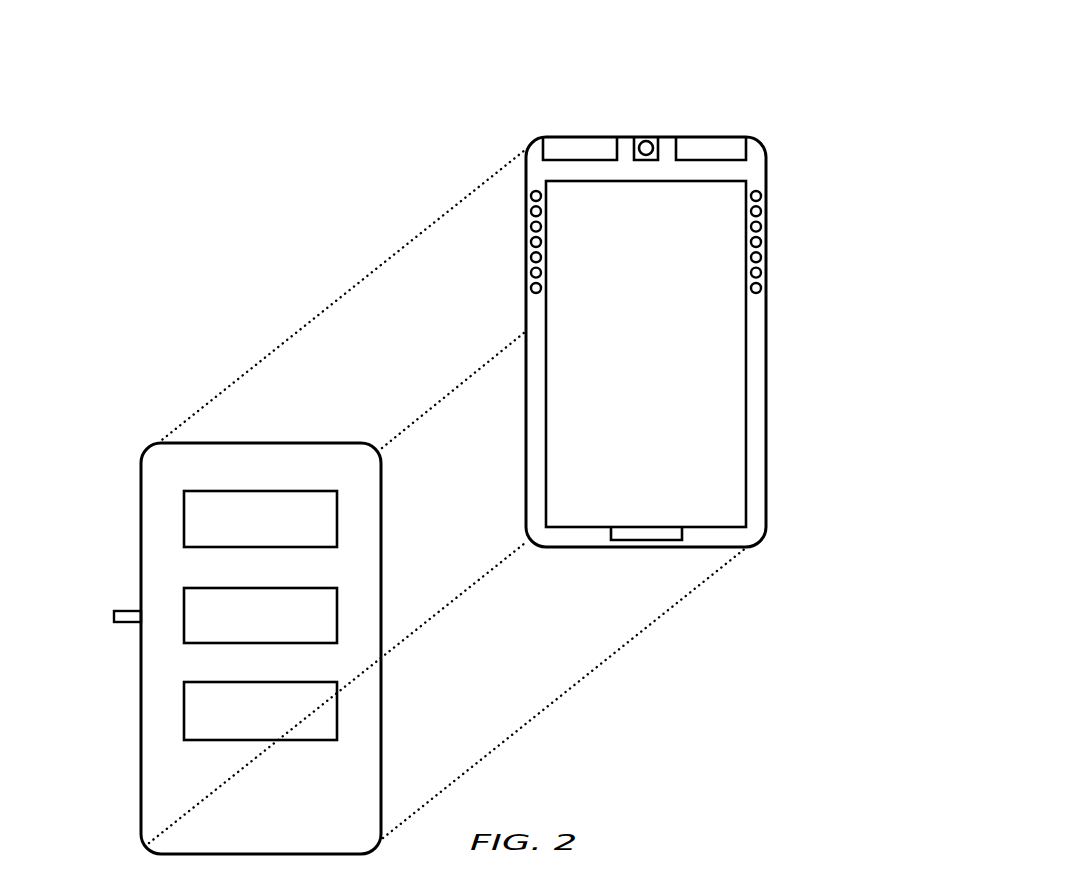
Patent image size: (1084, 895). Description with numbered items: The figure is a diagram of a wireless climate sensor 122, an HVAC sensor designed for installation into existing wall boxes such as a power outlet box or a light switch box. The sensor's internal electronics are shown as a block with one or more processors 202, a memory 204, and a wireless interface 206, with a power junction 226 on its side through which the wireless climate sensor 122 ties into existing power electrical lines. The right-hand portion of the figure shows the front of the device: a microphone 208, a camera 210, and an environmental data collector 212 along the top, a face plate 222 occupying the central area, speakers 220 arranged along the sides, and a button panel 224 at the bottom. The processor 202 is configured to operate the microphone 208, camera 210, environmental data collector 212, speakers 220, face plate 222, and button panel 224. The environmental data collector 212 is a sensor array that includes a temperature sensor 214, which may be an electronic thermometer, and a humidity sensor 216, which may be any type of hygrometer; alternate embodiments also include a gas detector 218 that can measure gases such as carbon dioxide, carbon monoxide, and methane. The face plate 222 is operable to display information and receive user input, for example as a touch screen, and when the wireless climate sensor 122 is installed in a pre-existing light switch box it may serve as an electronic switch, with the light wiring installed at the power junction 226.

The wireless climate sensor 122 is at (870, 33).
The processor 202 is at (277, 531).
The memory 204 is at (277, 626).
The wireless interface 206 is at (277, 723).
The microphone 208 is at (575, 148).
The camera 210 is at (640, 135).
The environmental data collector 212 is at (743, 71).
The temperature sensor 214 is at (693, 150).
The humidity sensor 216 is at (717, 150).
The gas detector 218 is at (738, 150).
The speakers 220 is at (772, 187).
The face plate 222 is at (662, 306).
The button panel 224 is at (643, 535).
The power junction 226 is at (111, 620).